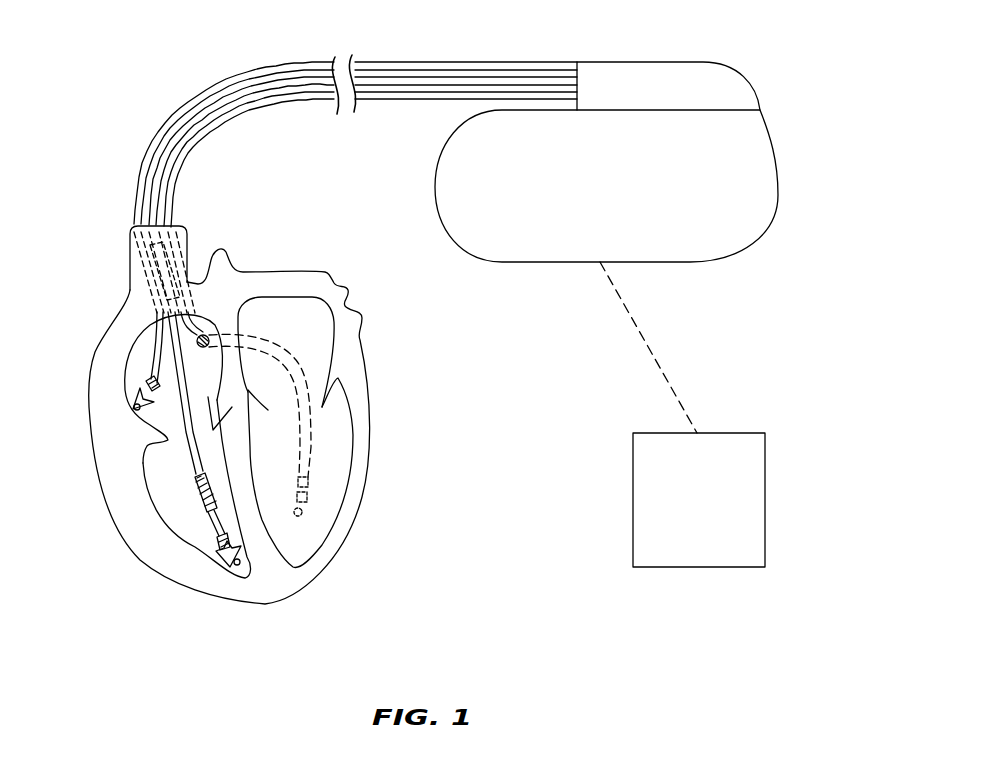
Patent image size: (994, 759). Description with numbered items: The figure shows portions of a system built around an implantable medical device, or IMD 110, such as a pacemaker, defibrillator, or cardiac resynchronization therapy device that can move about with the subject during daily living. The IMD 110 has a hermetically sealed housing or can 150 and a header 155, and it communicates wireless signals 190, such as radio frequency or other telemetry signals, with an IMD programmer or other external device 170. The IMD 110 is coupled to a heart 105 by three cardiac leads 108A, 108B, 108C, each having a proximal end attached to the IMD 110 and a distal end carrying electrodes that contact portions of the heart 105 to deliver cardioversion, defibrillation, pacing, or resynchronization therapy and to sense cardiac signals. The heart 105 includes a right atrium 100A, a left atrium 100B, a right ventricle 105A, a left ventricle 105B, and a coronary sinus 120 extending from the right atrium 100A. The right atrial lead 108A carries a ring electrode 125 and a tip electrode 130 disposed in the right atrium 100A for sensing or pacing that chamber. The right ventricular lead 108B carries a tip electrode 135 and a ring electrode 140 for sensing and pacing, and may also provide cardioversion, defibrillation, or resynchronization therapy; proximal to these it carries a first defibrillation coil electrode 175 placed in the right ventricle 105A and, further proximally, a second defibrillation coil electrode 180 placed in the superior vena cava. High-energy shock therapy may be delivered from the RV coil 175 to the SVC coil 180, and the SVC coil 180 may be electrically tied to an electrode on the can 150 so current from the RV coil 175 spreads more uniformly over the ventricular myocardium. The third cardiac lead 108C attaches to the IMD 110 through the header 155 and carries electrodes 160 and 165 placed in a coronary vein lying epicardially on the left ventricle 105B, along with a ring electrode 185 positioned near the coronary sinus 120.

The IMD 110 is at (670, 49).
The heart 105 is at (370, 400).
The right atrium 100A is at (164, 414).
The left atrium 100B is at (298, 315).
The right ventricle 105A is at (167, 466).
The left ventricle 105B is at (300, 548).
The right atrial lead 108A is at (268, 70).
The right ventricular lead 108B is at (212, 103).
The third cardiac lead 108C is at (235, 130).
The coronary sinus 120 is at (200, 350).
The ring electrode 125 is at (153, 383).
The tip electrode 130 is at (131, 410).
The tip electrode 135 is at (234, 570).
The ring electrode 140 is at (217, 541).
The IMD can 150 is at (778, 168).
The header 155 is at (742, 74).
The electrode 160 is at (309, 483).
The electrode 165 is at (303, 508).
The external device 170 is at (698, 568).
The first defibrillation coil electrode 175 is at (195, 478).
The second defibrillation coil electrode 180 is at (152, 276).
The ring electrode 185 is at (206, 316).
The wireless signals 190 is at (650, 348).